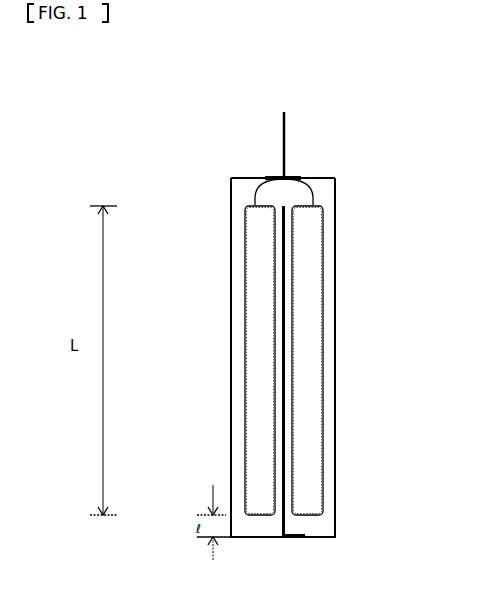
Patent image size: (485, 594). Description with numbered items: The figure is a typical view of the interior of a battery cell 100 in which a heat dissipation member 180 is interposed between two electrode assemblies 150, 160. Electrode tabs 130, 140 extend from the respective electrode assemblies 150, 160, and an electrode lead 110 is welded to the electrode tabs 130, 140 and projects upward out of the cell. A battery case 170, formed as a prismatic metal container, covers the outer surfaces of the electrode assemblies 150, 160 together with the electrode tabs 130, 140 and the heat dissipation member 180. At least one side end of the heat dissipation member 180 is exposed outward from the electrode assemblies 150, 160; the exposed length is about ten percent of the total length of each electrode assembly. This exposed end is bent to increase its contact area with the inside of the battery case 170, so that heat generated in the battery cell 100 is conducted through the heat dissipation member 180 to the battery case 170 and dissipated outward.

The battery cell 100 is at (62, 113).
The electrode lead 110 is at (286, 140).
The electrode tab 130 is at (231, 182).
The electrode tab 140 is at (305, 190).
The electrode assembly 150 is at (258, 372).
The electrode assembly 160 is at (308, 404).
The battery case 170 is at (335, 462).
The heat dissipation member 180 is at (285, 320).